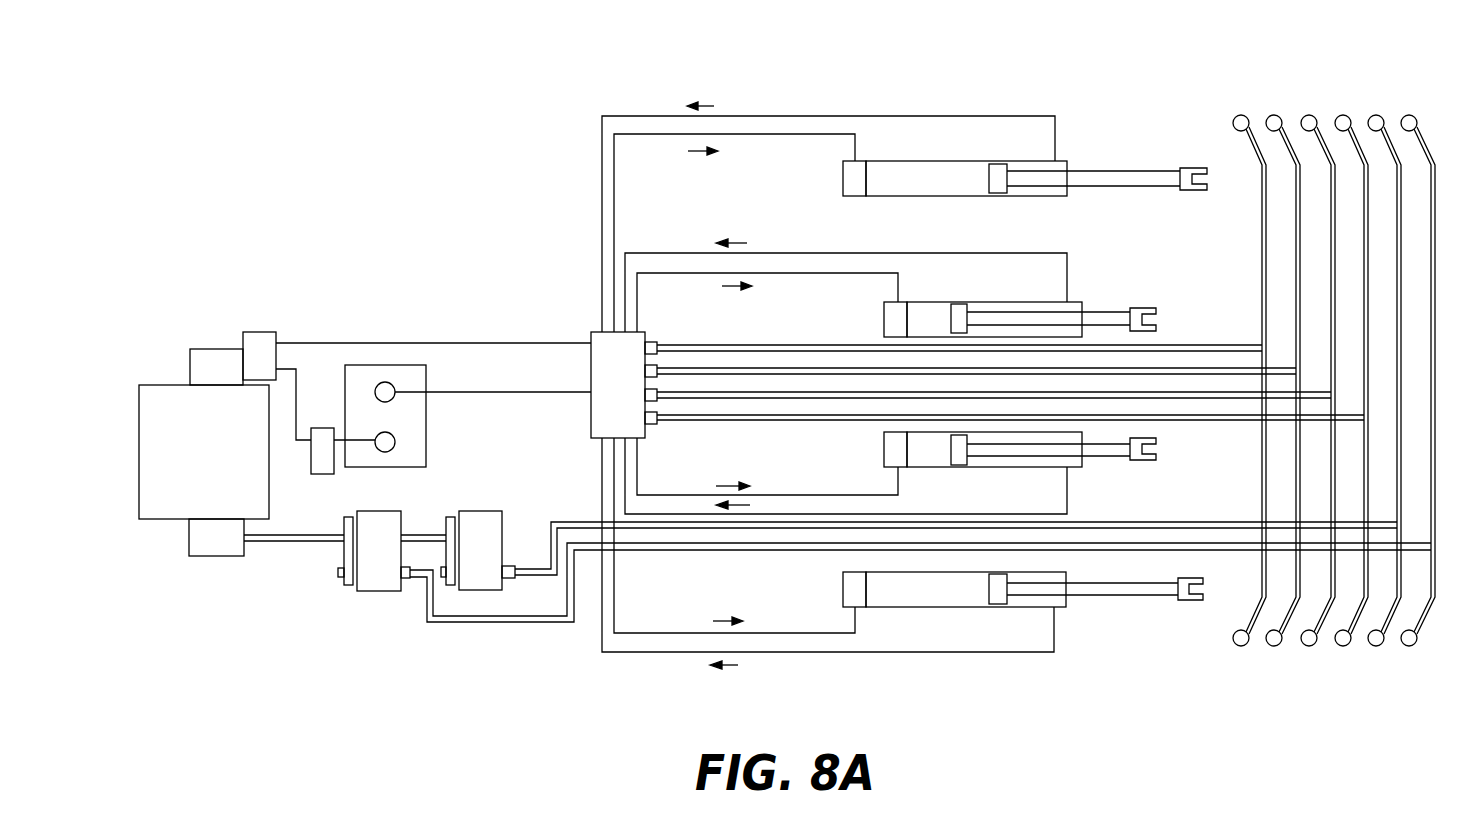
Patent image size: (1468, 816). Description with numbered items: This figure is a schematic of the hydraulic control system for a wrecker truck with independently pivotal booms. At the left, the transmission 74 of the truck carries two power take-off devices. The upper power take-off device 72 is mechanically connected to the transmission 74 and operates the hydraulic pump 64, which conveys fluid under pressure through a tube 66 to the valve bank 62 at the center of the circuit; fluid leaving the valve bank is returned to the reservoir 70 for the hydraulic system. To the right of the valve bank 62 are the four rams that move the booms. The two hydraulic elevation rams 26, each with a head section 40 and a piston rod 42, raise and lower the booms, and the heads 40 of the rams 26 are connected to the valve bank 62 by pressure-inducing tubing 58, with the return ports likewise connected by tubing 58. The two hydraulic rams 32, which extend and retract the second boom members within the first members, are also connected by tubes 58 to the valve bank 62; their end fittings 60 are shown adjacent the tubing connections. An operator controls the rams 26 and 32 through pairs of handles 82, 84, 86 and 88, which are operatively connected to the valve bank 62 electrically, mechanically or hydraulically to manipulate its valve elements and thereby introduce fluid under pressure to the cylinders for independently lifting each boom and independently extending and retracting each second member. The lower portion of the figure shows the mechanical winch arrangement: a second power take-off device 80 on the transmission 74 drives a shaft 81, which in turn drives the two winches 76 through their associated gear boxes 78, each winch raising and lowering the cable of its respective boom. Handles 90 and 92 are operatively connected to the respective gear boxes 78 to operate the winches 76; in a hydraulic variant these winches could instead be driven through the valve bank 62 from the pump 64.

The hydraulic elevation ram 26 is at (912, 161).
The hydraulic ram 32 is at (977, 302).
The head section 40 is at (855, 197).
The piston rod 42 is at (1102, 172).
The pressure-inducing tubing 58 is at (778, 134).
The cylinder end 60 is at (883, 302).
The valve bank 62 is at (591, 400).
The hydraulic pump 64 is at (265, 332).
The tube 66 is at (490, 343).
The reservoir 70 is at (370, 365).
The power take-off device 72 is at (207, 348).
The transmission 74 is at (157, 385).
The winch 76 is at (372, 591).
The gear box 78 is at (462, 511).
The power take-off device 80 is at (205, 556).
The shaft 81 is at (272, 541).
The handle 82 is at (1241, 115).
The handle 84 is at (1274, 115).
The handle 86 is at (1309, 115).
The handle 88 is at (1343, 115).
The handle 90 is at (1376, 115).
The handle 92 is at (1409, 115).